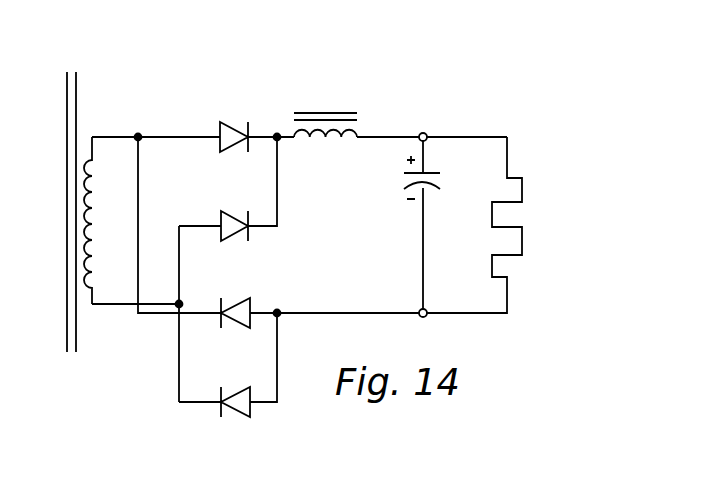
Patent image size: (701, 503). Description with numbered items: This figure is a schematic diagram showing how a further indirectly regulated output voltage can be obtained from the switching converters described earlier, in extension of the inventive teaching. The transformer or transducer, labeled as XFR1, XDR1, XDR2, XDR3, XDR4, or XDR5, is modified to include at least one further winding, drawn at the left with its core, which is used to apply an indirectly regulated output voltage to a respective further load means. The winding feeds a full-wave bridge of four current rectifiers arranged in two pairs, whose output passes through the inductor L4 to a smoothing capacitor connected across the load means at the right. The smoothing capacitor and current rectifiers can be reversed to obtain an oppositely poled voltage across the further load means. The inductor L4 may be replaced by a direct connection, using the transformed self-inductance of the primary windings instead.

The inductor L4 is at (325, 113).